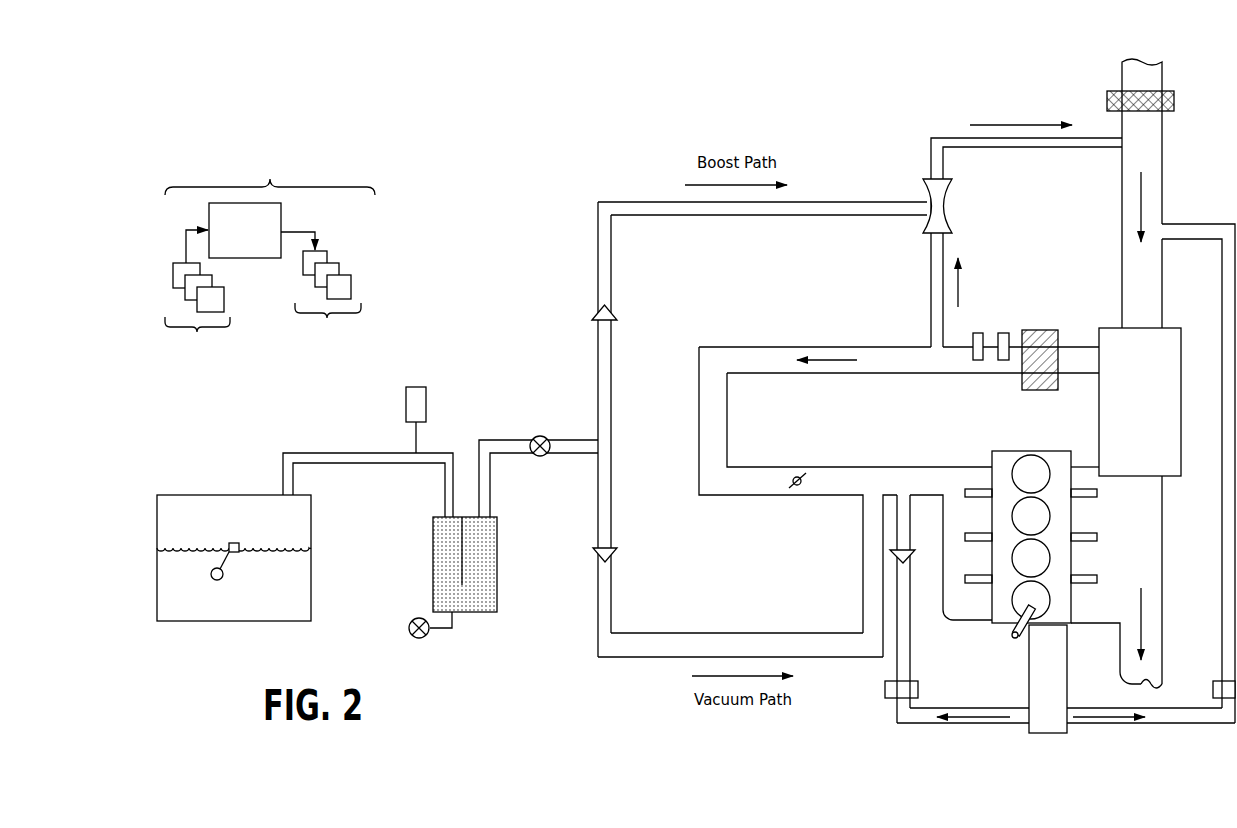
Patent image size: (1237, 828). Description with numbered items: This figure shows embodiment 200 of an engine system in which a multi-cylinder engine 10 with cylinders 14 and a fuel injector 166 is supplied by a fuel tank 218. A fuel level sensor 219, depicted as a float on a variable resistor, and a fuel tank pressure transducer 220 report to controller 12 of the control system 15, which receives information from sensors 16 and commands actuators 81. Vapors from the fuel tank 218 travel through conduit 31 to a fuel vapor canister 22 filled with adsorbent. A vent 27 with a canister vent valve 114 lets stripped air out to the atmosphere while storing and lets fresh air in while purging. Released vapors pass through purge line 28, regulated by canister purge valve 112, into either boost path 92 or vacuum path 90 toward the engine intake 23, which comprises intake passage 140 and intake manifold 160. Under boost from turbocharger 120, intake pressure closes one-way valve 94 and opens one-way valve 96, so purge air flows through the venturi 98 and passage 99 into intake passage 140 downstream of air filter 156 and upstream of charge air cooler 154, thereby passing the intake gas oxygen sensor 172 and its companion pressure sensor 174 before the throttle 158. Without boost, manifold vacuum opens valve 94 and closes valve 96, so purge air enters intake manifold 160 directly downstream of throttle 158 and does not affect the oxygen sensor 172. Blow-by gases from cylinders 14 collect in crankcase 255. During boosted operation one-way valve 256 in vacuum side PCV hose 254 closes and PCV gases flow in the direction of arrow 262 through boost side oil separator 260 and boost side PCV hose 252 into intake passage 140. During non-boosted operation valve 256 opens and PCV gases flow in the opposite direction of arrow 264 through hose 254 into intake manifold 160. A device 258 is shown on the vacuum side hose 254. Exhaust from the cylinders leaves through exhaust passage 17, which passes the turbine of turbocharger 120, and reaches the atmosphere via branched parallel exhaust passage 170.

The embodiment 200 is at (240, 85).
The control system 15 is at (270, 168).
The controller 12 is at (245, 230).
The sensors 16 is at (197, 295).
The actuators 81 is at (321, 291).
The fuel tank 218 is at (311, 583).
The fuel level sensor 219 is at (239, 548).
The conduit 31 is at (310, 453).
The fuel tank pressure transducer 220 is at (426, 398).
The fuel vapor canister 22 is at (483, 612).
The vent 27 is at (409, 628).
The canister vent valve 114 is at (421, 638).
The purge line 28 is at (562, 440).
The canister purge valve 112 is at (543, 456).
The boost path 92 is at (732, 218).
The one-way valve 96 is at (610, 303).
The one-way valve 94 is at (613, 557).
The vacuum path 90 is at (705, 634).
The engine intake 23 is at (806, 308).
The throttle 158 is at (802, 485).
The passage 99 is at (950, 137).
The venturi 98 is at (940, 212).
The intake passage 140 is at (1122, 222).
The air filter 156 is at (1174, 101).
The boost side PCV hose 252 is at (1178, 223).
The intake gas oxygen sensor 172 is at (978, 333).
The pressure sensor 174 is at (1004, 333).
The charge air cooler 154 is at (1042, 330).
The turbocharger 120 is at (1126, 402).
The exhaust passage 17 is at (1162, 548).
The branched parallel exhaust passage 170 is at (1162, 670).
The engine 10 is at (971, 628).
The cylinder 14 is at (1046, 473).
The intake manifold 160 is at (968, 515).
The fuel injector 166 is at (1013, 637).
The vacuum side PCV hose 254 is at (910, 633).
The one-way valve 256 is at (912, 558).
The oil separator 258 is at (885, 700).
The arrow 264 is at (960, 717).
The arrow 262 is at (1085, 715).
The boost side oil separator 260 is at (1213, 692).
The crankcase 255 is at (1048, 679).